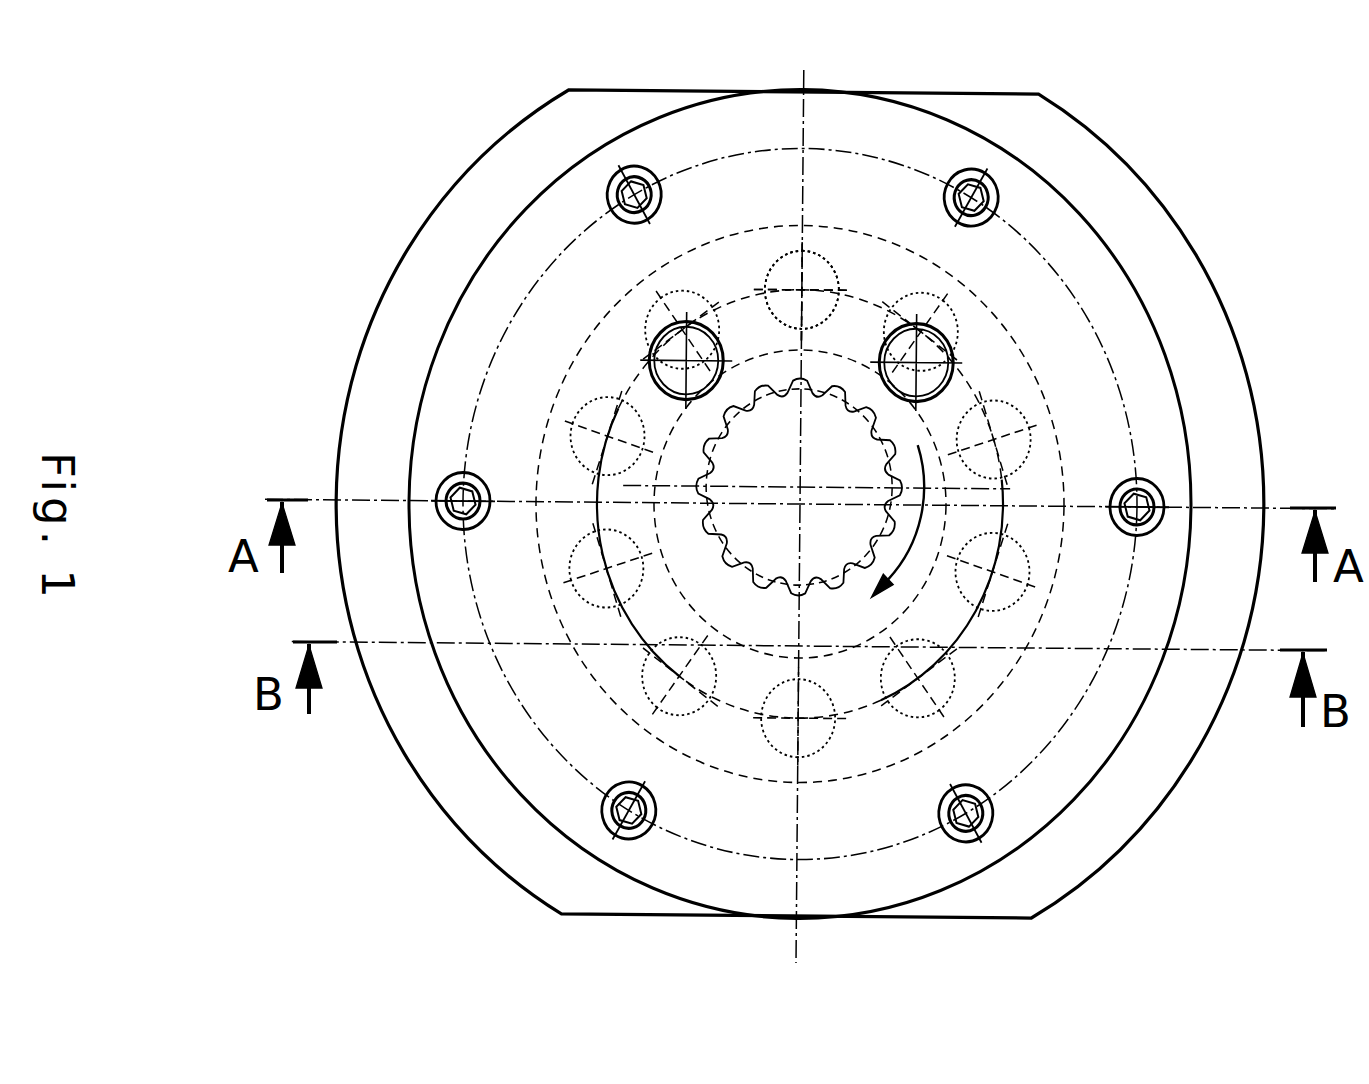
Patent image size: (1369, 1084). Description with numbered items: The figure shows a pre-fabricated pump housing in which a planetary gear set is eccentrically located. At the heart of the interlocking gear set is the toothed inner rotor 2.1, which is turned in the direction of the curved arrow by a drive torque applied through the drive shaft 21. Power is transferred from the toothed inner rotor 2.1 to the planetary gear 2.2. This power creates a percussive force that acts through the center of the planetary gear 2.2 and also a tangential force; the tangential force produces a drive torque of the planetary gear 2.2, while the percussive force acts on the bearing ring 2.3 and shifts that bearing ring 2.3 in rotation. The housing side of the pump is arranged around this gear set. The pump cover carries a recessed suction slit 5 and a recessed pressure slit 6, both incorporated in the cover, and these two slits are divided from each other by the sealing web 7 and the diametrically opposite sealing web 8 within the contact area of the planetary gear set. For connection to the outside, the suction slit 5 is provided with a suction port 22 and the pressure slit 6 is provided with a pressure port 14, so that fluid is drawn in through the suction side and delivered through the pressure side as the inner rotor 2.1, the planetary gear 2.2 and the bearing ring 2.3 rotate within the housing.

The sealing web 7 is at (773, 329).
The pressure port 14 is at (663, 386).
The pressure slit 6 is at (604, 492).
The drive shaft 21 is at (819, 401).
The suction port 22 is at (931, 388).
The suction slit 5 is at (950, 616).
The inner rotor 2.1 is at (904, 621).
The planetary gear 2.2 is at (937, 685).
The bearing ring 2.3 is at (887, 742).
The sealing web 8 is at (734, 686).